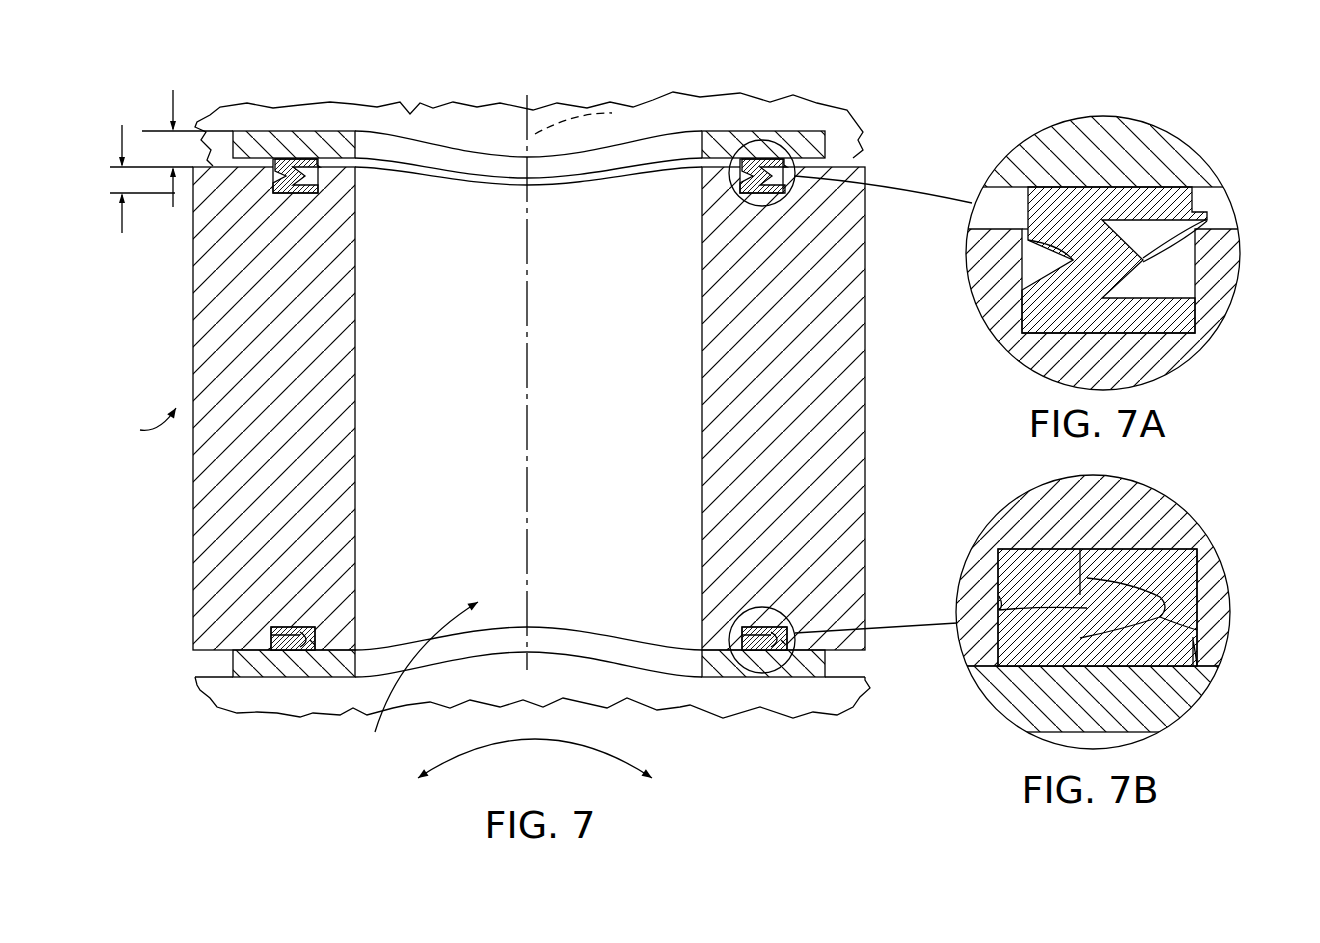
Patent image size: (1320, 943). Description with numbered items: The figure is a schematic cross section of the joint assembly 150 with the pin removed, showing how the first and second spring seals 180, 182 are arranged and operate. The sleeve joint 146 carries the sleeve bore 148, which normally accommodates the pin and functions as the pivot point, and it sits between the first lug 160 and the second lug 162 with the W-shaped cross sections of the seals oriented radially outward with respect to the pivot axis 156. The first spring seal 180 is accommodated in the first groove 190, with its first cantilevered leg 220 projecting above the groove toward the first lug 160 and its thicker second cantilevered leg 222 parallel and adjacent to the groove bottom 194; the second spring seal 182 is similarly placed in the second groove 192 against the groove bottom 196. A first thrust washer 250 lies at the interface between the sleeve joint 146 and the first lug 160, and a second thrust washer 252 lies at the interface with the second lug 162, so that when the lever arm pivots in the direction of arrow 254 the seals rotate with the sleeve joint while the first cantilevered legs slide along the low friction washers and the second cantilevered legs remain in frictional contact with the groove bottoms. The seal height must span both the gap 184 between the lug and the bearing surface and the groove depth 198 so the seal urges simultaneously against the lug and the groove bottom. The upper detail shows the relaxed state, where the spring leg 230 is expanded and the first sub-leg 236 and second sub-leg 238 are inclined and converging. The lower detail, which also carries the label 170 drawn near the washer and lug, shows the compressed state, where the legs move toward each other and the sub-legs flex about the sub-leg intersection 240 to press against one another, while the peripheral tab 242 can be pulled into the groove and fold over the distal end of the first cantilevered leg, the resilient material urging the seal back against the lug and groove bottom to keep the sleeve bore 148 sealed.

In FIG. 7, the sleeve joint 146 is at (222, 318).
In FIG. 7, the sleeve bore 148 is at (406, 678).
In FIG. 7, the joint assembly 150 is at (138, 426).
In FIG. 7, the pivot axis 156 is at (612, 113).
In FIG. 7, the first lug 160 is at (810, 120).
In FIG. 7, the second lug 162 is at (805, 695).
In FIG. 7, the flange 170 is at (223, 160).
In FIG. 7B, the flange 170 is at (1130, 650).
In FIG. 7, the first spring seal 180 is at (772, 193).
In FIG. 7A, the first spring seal 180 is at (997, 180).
In FIG. 7, the second spring seal 182 is at (790, 612).
In FIG. 7B, the second spring seal 182 is at (1013, 547).
In FIG. 7, the gap 184 is at (171, 128).
In FIG. 7, the first groove 190 is at (318, 165).
In FIG. 7, the second groove 192 is at (315, 637).
In FIG. 7, the groove bottom 194 is at (307, 193).
In FIG. 7, the groove bottom 196 is at (310, 625).
In FIG. 7, the groove depth 198 is at (139, 199).
In FIG. 7, the first cantilevered leg 220 is at (273, 163).
In FIG. 7A, the first cantilevered leg 220 is at (1147, 203).
In FIG. 7, the second cantilevered leg 222 is at (222, 253).
In FIG. 7A, the second cantilevered leg 222 is at (1148, 318).
In FIG. 7B, the second cantilevered leg 222 is at (1157, 575).
In FIG. 7A, the spring leg 230 is at (1040, 268).
In FIG. 7B, the spring leg 230 is at (998, 625).
In FIG. 7A, the first sub-leg 236 is at (1077, 233).
In FIG. 7B, the first sub-leg 236 is at (1077, 617).
In FIG. 7A, the second sub-leg 238 is at (1077, 280).
In FIG. 7B, the second sub-leg 238 is at (1078, 550).
In FIG. 7A, the sub-leg intersection 240 is at (1170, 287).
In FIG. 7A, the peripheral tab 242 is at (1205, 218).
In FIG. 7B, the peripheral tab 242 is at (1195, 650).
In FIG. 7, the first thrust washer 250 is at (815, 142).
In FIG. 7, the second thrust washer 252 is at (810, 668).
In FIG. 7, the arrow 254 is at (535, 742).